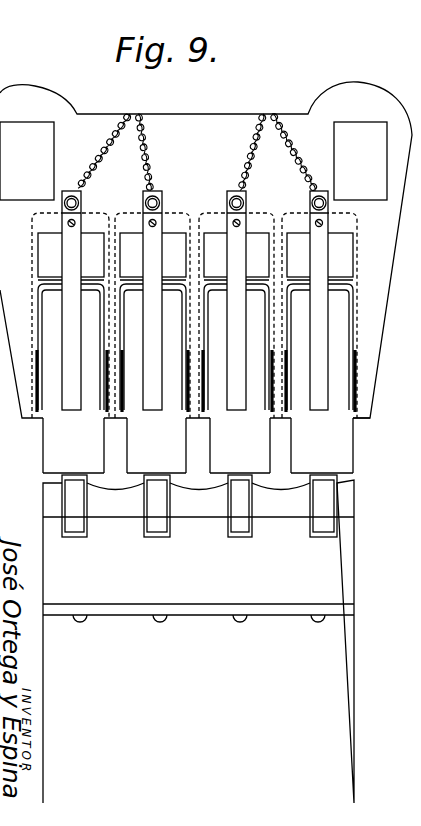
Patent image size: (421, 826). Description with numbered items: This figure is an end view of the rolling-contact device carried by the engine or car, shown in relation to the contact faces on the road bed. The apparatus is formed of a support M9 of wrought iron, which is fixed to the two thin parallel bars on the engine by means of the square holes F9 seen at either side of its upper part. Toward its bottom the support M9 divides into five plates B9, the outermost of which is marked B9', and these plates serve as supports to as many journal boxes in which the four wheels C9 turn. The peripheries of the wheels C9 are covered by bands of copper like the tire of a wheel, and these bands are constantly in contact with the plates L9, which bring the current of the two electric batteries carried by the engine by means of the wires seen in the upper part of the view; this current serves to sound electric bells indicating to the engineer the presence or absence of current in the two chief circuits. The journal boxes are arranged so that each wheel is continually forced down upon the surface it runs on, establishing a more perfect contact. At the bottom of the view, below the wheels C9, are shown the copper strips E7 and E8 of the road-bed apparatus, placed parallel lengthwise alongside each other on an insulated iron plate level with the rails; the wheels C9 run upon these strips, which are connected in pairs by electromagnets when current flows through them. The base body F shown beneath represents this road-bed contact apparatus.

The square holes F9 is at (193, 161).
The support M9 is at (197, 152).
The plates L9 is at (316, 306).
The plates B9 is at (191, 343).
The plate B9' is at (369, 437).
The wheels C9 is at (195, 353).
The copper strip E7 is at (116, 506).
The copper strip E8 is at (282, 506).
The base body F is at (43, 531).